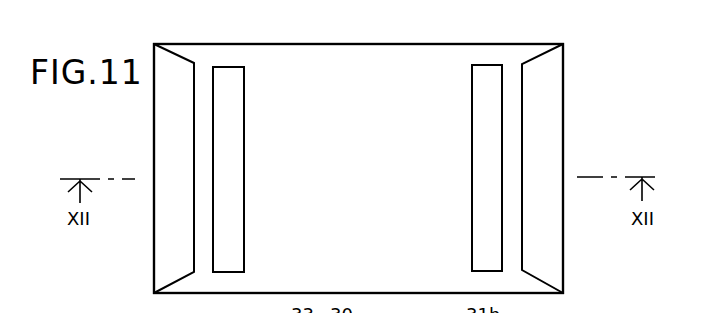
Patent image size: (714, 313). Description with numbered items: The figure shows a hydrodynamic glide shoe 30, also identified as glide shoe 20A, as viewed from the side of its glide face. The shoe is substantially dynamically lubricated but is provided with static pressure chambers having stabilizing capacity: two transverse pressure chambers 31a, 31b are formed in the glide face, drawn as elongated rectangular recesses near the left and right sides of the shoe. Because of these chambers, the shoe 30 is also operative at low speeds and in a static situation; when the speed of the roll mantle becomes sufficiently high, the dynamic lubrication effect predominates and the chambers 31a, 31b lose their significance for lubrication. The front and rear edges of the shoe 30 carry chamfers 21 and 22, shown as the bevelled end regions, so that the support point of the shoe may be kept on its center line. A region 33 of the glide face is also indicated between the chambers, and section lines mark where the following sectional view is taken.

The glide shoe 30 is at (375, 80).
The glide shoe 20A is at (457, 170).
The upper surface 33 is at (318, 62).
The chamfer 21 is at (155, 244).
The chamfer 22 is at (560, 232).
The transverse pressure chamber 31a is at (225, 78).
The transverse pressure chamber 31b is at (489, 75).